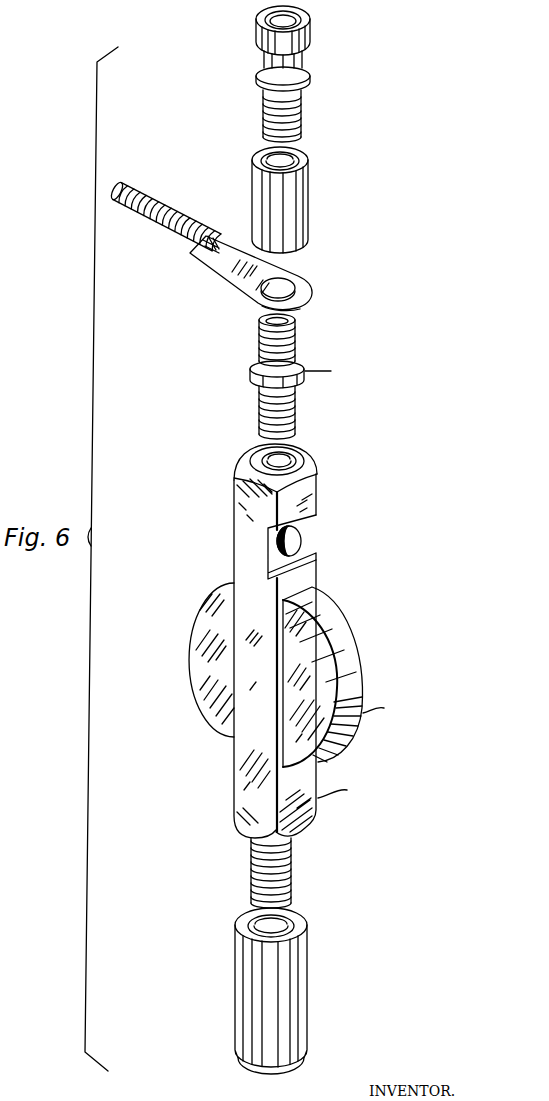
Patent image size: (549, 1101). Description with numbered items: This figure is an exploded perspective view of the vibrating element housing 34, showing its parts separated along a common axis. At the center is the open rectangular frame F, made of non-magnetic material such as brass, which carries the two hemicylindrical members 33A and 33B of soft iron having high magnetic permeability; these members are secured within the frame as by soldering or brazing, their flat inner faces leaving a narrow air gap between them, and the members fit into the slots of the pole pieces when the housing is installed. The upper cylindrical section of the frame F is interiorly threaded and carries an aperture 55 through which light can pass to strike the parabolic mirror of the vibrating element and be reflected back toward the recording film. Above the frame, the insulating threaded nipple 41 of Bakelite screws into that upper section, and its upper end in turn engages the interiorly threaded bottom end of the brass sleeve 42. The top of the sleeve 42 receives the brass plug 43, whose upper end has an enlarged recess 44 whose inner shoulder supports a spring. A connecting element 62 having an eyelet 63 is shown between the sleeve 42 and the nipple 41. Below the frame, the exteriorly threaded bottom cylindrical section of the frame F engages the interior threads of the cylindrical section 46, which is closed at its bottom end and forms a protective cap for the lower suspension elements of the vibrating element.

The vibrating element housing 34 is at (90, 377).
The enlarged recess 44 is at (296, 16).
The plug 43 is at (309, 77).
The sleeve 42 is at (309, 214).
The connecting element 62 is at (218, 270).
The eyelet 63 is at (306, 290).
The threaded nipple 41 is at (250, 372).
The open rectangular frame F is at (234, 522).
The aperture 55 is at (299, 541).
The member 33A is at (197, 604).
The member 33B is at (348, 650).
The cylindrical section 46 is at (308, 972).